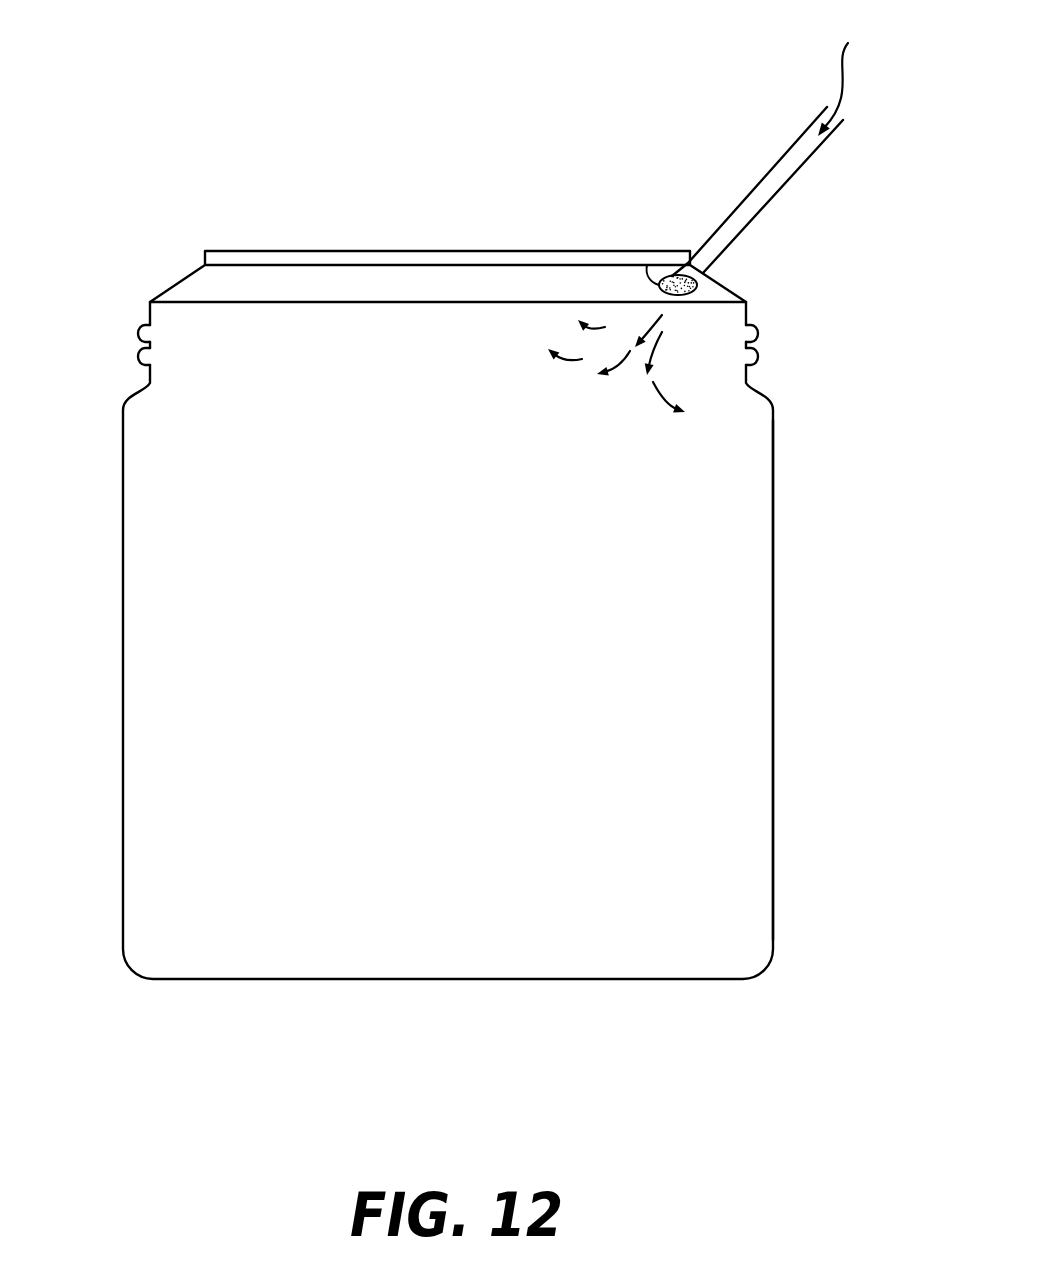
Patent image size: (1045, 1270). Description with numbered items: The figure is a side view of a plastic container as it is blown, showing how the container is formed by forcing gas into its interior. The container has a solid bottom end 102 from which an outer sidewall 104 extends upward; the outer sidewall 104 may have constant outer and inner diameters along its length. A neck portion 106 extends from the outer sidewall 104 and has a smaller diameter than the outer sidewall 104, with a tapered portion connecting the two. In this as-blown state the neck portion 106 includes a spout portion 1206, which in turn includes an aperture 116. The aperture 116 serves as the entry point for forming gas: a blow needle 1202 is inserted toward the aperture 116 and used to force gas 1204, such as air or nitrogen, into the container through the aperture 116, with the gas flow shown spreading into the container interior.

The solid bottom end 102 is at (447, 980).
The outer sidewall 104 is at (775, 603).
The neck portion 106 is at (140, 344).
The aperture 116 is at (655, 276).
The blow needle 1202 is at (773, 160).
The gas 1204 is at (853, 74).
The spout portion 1206 is at (212, 290).